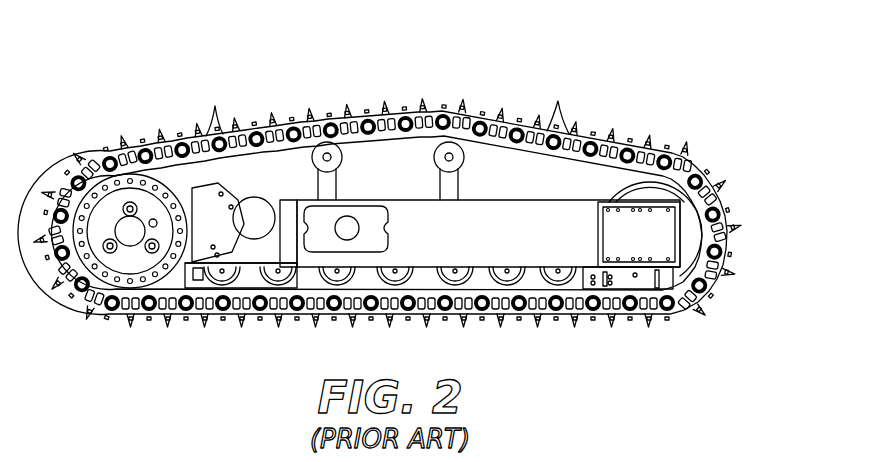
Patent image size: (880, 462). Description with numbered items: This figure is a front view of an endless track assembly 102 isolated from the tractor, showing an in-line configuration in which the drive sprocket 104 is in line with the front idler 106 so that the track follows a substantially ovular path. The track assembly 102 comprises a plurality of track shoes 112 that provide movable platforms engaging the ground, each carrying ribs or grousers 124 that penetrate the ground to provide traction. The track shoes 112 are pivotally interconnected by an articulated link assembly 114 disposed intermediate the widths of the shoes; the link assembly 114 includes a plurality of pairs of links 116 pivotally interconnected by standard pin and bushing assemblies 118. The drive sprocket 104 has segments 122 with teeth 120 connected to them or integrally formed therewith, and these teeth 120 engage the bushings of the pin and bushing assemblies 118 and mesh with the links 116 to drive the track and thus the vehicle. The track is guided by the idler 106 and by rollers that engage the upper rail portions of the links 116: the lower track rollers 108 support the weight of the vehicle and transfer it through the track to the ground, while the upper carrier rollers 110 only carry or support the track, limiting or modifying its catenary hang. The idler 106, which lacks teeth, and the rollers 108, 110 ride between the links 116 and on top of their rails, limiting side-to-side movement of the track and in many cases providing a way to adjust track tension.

The track assembly 102 is at (709, 84).
The drive sprocket 104 is at (112, 262).
The idler 106 is at (684, 311).
The track rollers 108 is at (503, 280).
The carrier rollers 110 is at (341, 160).
The track shoes 112 is at (353, 112).
The link assembly 114 is at (215, 106).
The links 116 is at (154, 147).
The pin and bushing assemblies 118 is at (262, 120).
The teeth 120 is at (178, 187).
The segments 122 is at (116, 153).
The grousers 124 is at (735, 247).